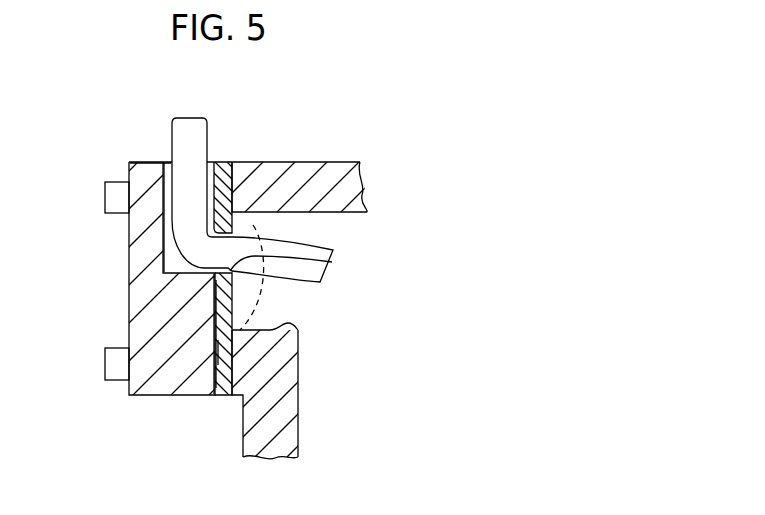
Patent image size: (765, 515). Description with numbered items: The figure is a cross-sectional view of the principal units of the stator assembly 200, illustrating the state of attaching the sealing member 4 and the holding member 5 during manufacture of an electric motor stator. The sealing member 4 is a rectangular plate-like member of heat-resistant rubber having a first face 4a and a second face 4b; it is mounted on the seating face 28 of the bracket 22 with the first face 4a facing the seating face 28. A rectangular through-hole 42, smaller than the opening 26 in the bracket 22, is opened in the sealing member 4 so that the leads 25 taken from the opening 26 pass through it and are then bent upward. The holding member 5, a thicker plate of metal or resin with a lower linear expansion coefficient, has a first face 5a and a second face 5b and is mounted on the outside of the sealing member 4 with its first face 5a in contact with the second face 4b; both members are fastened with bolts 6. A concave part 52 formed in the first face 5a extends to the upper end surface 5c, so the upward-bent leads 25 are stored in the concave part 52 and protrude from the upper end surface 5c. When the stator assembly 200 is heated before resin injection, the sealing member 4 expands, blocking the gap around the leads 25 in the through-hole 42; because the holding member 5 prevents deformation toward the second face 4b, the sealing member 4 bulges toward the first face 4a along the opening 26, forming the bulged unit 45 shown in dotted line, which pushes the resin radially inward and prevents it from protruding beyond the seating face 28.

The stator assembly 200 is at (346, 124).
The holding member 5 is at (150, 396).
The first face 5a is at (232, 294).
The second face 5b is at (129, 270).
The upper end surface 5c is at (138, 162).
The concave part 52 is at (167, 197).
The bolts 6 is at (105, 196).
The leads 25 is at (207, 128).
The through-hole 42 is at (330, 267).
The bulged unit 45 is at (234, 214).
The bracket 22 is at (302, 425).
The opening 26 is at (283, 323).
The seating face 28 is at (217, 352).
The sealing member 4 is at (223, 396).
The first face 4a is at (232, 360).
The second face 4b is at (215, 367).